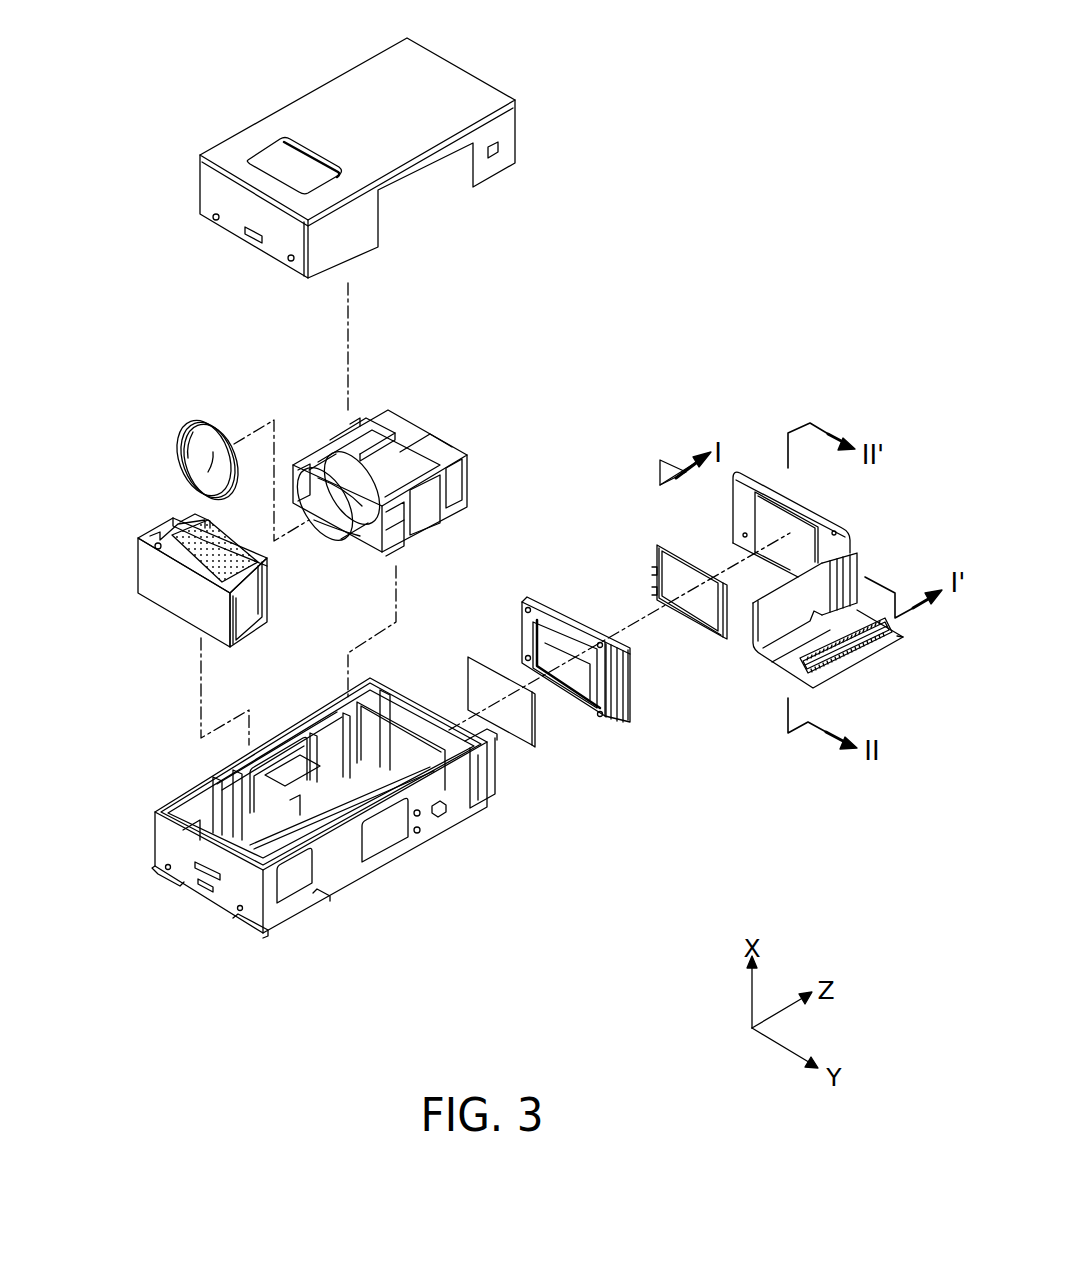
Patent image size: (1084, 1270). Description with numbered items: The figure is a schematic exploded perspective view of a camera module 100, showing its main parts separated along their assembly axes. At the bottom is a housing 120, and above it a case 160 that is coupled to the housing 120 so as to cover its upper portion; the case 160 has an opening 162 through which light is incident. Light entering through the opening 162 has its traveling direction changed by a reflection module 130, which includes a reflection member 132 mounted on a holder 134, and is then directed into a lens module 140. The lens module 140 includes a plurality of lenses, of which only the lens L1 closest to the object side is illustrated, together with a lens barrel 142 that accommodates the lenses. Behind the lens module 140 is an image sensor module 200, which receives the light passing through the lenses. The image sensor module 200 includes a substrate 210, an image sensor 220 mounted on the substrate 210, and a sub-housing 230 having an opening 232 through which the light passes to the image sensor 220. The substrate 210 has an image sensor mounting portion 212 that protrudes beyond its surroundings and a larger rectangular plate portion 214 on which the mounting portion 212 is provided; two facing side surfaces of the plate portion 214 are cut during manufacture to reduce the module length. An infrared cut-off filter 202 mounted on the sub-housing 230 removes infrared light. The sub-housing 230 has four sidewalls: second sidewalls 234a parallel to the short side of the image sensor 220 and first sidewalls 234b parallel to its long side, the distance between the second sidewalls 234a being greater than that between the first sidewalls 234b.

The camera module 100 is at (712, 91).
The housing 120 is at (172, 848).
The reflection module 130 is at (48, 472).
The reflection member 132 is at (182, 548).
The holder 134 is at (160, 582).
The lens module 140 is at (330, 368).
The lens L1 is at (200, 455).
The lens barrel 142 is at (337, 460).
The case 160 is at (347, 100).
The opening 162 is at (280, 157).
The image sensor module 200 is at (503, 515).
The infrared cut-off filter 202 is at (475, 686).
The substrate 210 is at (725, 520).
The image sensor mounting portion 212 is at (805, 528).
The plate portion 214 is at (748, 487).
The image sensor 220 is at (645, 540).
The sub-housing 230 is at (512, 612).
The opening 232 is at (574, 672).
The second sidewalls 234a is at (625, 692).
The first sidewalls 234b is at (628, 648).